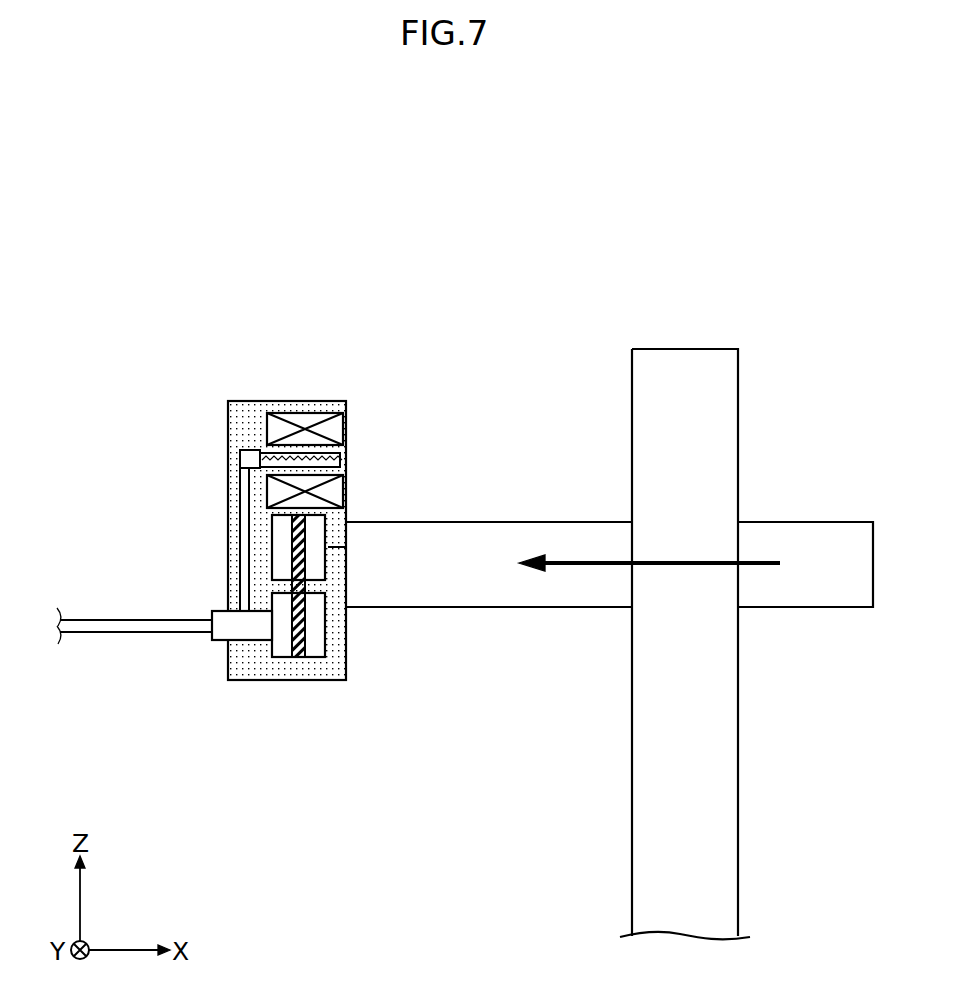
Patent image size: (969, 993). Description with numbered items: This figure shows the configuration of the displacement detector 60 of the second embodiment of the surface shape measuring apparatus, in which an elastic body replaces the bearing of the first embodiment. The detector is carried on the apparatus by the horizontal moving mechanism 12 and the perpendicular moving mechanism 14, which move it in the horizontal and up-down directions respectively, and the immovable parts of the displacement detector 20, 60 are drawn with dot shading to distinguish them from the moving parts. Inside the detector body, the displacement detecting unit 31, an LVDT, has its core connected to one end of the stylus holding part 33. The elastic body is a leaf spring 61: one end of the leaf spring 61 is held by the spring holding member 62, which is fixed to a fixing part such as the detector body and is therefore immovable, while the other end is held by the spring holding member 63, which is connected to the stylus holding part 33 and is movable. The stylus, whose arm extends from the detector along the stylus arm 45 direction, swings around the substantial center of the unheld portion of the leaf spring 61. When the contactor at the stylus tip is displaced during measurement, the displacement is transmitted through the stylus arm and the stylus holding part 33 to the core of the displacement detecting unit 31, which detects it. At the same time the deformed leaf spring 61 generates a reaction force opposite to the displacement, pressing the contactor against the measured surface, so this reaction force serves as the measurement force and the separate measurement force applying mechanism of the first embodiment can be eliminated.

The horizontal moving mechanism 12 is at (805, 532).
The perpendicular moving mechanism 14 is at (686, 357).
The displacement detector 20 is at (294, 542).
The displacement detecting unit 31 is at (258, 425).
The stylus holding part 33 is at (245, 523).
The shaft (arm 42) 45 is at (80, 620).
The displacement detector 60 is at (262, 401).
The leaf spring 61 is at (300, 655).
The spring holding member 62 is at (318, 566).
The spring holding member 63 is at (277, 647).